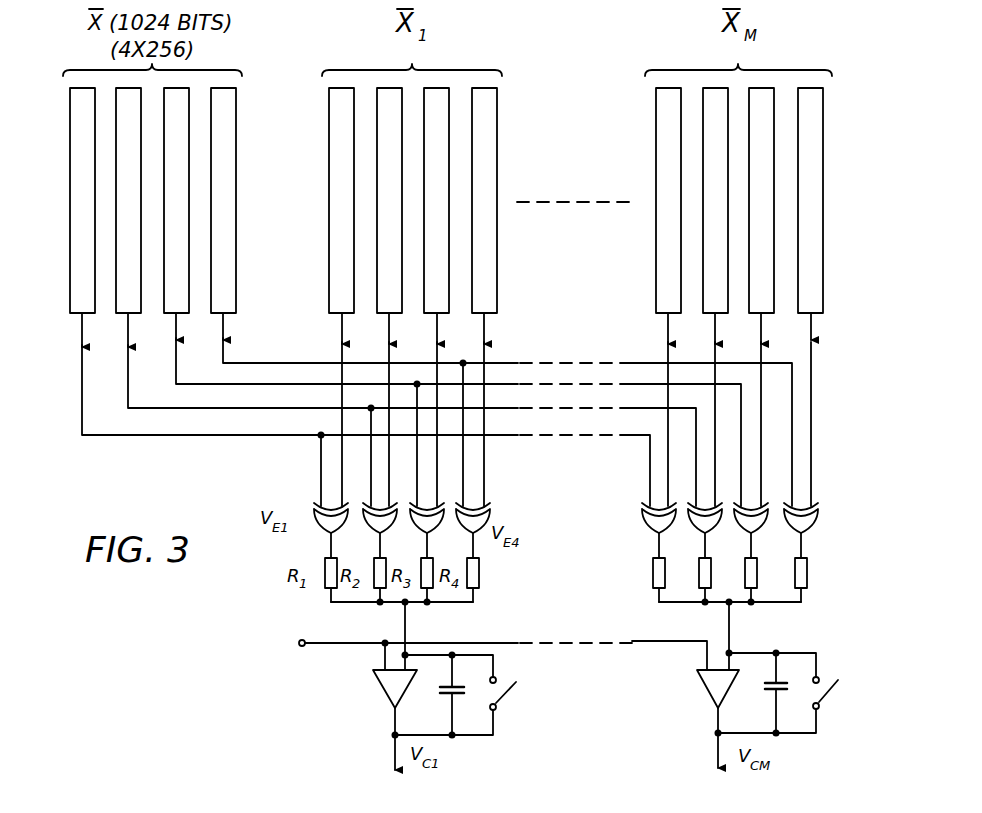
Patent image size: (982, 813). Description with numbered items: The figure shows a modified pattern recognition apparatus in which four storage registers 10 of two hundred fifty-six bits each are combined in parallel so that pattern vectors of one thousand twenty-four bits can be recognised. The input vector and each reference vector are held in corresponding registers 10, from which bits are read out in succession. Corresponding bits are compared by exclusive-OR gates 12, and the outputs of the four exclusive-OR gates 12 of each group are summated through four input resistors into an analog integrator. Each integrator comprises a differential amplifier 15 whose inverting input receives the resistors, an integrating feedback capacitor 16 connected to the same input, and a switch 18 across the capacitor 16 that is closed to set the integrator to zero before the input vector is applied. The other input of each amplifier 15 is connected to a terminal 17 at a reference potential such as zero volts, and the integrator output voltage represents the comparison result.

The N-bit registers 10 is at (329, 233).
The exclusive-OR gates 12 is at (487, 519).
The differential amplifier 15 is at (373, 688).
The integrating feedback capacitors 16 is at (457, 695).
The terminal 17 is at (298, 643).
The switches 18 is at (505, 678).